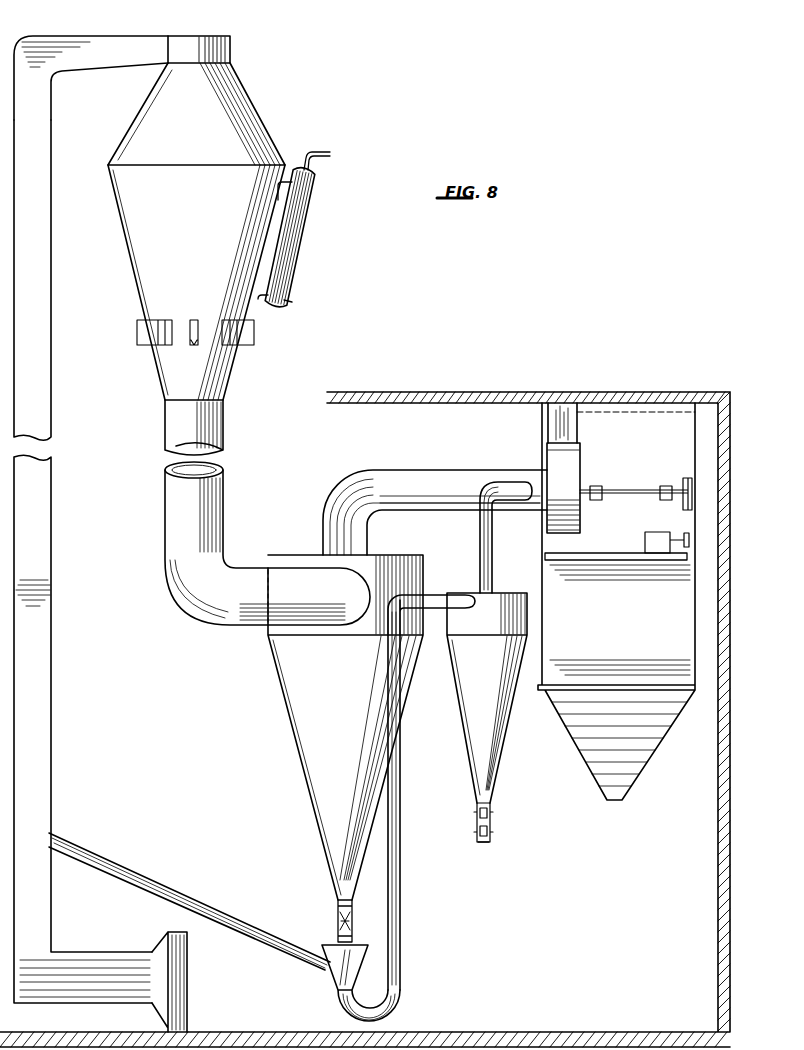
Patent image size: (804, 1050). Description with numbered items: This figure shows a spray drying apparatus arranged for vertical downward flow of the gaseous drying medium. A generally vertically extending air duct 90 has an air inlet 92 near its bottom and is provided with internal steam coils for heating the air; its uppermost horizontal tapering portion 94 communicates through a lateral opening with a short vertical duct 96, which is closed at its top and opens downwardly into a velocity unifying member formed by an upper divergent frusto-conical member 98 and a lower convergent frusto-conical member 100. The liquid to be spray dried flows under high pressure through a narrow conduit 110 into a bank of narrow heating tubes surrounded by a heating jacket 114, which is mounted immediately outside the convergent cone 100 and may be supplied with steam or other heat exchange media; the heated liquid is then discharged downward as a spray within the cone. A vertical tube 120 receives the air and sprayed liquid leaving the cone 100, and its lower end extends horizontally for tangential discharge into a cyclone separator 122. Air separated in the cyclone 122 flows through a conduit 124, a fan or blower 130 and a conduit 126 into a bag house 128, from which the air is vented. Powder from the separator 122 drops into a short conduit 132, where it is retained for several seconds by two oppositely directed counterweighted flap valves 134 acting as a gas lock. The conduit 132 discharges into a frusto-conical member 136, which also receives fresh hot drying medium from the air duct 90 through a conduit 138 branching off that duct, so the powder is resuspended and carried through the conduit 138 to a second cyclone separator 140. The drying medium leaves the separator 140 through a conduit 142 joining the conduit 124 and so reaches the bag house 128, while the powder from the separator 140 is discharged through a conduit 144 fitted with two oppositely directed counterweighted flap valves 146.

The air duct 90 is at (50, 688).
The air inlet 92 is at (175, 930).
The horizontal tapering portion 94 is at (105, 34).
The short vertical duct 96 is at (232, 48).
The upper divergent frusto-conical member 98 is at (218, 137).
The lower convergent frusto-conical member 100 is at (206, 221).
The narrow conduit 110 is at (321, 151).
The heating jacket 114 is at (298, 253).
The vertical tube 120 is at (223, 497).
The cyclone separator 122 is at (343, 695).
The conduit 124 is at (428, 496).
The conduit 126 is at (568, 429).
The bag house 128 is at (643, 632).
The fan or blower 130 is at (580, 475).
The short conduit 132 is at (336, 905).
The flap valves 134 is at (334, 925).
The frusto-conical member 136 is at (335, 978).
The conduit 138 is at (165, 884).
The cyclone separator 140 is at (497, 668).
The conduit 142 is at (480, 543).
The conduit 144 is at (493, 812).
The flap valves 146 is at (478, 838).